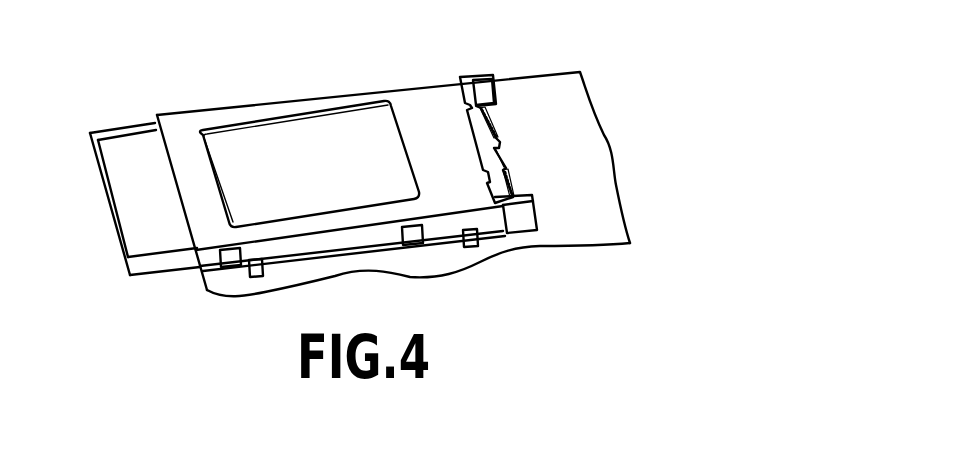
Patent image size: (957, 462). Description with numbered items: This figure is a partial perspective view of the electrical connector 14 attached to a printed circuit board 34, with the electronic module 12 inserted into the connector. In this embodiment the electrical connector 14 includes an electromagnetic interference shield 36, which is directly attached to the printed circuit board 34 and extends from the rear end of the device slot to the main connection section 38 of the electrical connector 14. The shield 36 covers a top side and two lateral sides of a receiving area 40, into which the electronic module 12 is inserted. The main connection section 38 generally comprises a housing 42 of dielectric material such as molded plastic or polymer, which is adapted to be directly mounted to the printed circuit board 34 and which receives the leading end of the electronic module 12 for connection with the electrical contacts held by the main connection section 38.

The electronic module 12 is at (103, 147).
The electrical connector 14 is at (480, 78).
The printed circuit board 34 is at (591, 117).
The electromagnetic interference (EMI) shield 36 is at (204, 118).
The main connection section 38 is at (493, 88).
The receiving area 40 is at (348, 115).
The housing 42 is at (548, 248).